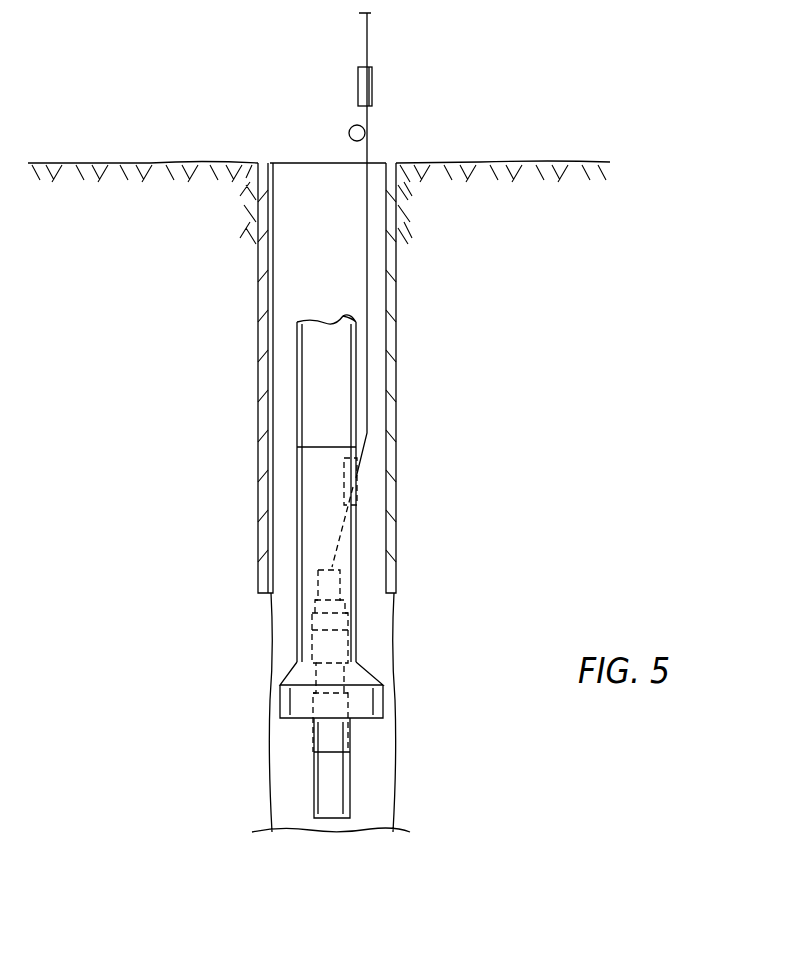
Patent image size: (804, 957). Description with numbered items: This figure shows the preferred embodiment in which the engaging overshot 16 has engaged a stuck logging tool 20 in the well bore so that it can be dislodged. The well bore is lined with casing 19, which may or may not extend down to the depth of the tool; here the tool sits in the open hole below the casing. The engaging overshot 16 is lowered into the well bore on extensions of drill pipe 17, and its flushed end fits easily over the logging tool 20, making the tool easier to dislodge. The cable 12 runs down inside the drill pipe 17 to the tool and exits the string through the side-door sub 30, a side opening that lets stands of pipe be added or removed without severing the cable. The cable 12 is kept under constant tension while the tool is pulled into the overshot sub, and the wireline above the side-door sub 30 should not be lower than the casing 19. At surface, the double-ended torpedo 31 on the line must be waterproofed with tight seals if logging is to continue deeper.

The cable 12 is at (343, 537).
The engaging overshot 16 is at (282, 695).
The drill pipe 17 is at (302, 462).
The casing 19 is at (390, 393).
The logging tool 20 is at (352, 777).
The side-door sub 30 is at (355, 480).
The double-ended torpedo 31 is at (372, 83).